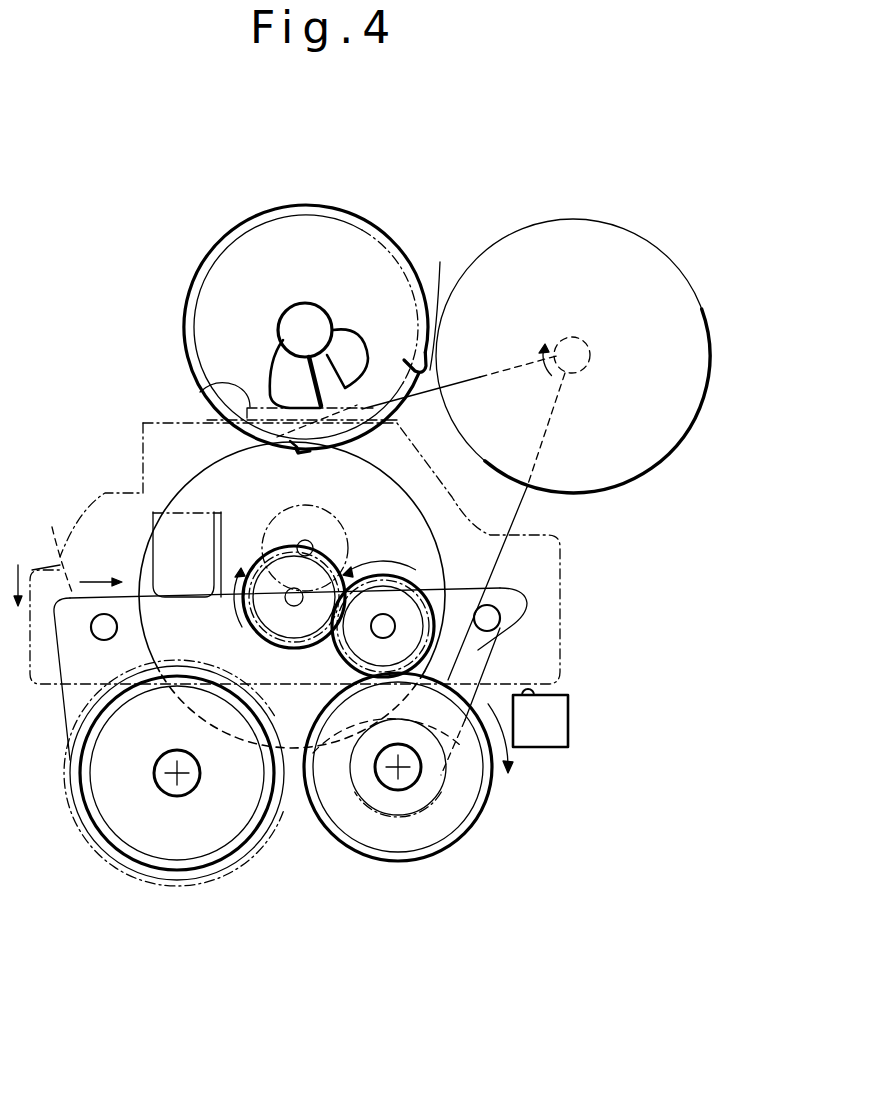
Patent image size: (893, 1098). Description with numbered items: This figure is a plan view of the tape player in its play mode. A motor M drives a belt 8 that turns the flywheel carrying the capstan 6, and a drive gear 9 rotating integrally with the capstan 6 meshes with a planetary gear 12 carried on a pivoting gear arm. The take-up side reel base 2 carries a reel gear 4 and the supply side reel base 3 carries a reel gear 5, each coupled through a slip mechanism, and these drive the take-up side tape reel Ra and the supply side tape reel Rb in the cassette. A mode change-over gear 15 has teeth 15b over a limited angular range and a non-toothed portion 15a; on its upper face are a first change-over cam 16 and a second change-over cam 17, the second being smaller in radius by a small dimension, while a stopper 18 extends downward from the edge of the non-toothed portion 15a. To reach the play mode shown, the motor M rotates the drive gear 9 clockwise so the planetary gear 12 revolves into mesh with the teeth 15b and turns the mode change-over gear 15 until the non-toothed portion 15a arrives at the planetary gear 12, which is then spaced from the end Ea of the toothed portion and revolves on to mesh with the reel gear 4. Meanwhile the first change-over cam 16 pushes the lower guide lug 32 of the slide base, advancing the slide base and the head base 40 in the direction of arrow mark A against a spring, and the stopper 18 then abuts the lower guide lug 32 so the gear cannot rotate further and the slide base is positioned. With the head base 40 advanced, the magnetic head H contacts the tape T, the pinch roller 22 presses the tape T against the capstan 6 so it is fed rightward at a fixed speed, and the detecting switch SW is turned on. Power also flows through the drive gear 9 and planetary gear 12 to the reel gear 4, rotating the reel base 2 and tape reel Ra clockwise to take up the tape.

The mode change-over gear 15 is at (378, 236).
The teeth 15b is at (230, 235).
The non-toothed portion 15a is at (444, 298).
The first change-over cam 16 is at (283, 367).
The second change-over cam 17 is at (344, 354).
The lower guide lug 32 is at (215, 402).
The end of the toothed portion Ea is at (308, 450).
The motor M is at (590, 243).
The belt 8 is at (523, 503).
The stopper 18 is at (405, 428).
The pinch roller 22 is at (284, 511).
The capstan 6 is at (285, 608).
The drive gear 9 is at (278, 648).
The planetary gear 12 is at (418, 584).
The magnetic head H is at (152, 550).
The tape T is at (278, 637).
The arrow mark A is at (61, 606).
The head base 40 is at (560, 577).
The detecting switch SW is at (543, 730).
The reel gear 5 is at (115, 847).
The reel base 3 is at (160, 782).
The tape reel Rb is at (232, 875).
The reel gear 4 is at (493, 800).
The reel base 2 is at (378, 780).
The tape reel Ra is at (387, 848).